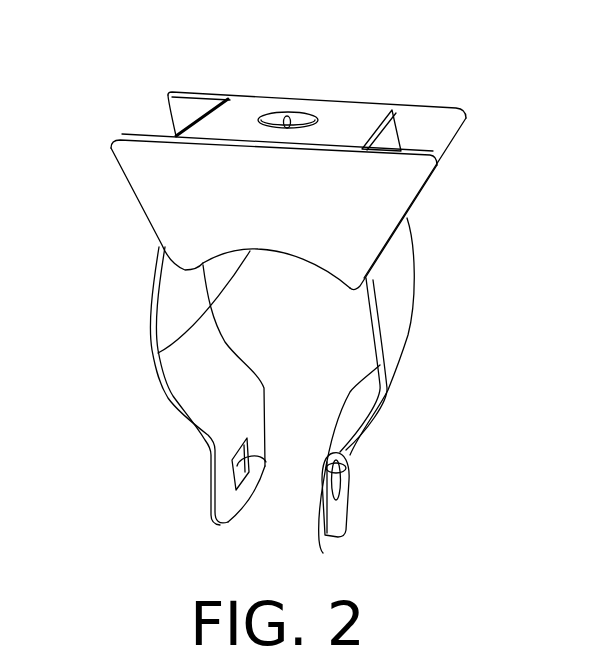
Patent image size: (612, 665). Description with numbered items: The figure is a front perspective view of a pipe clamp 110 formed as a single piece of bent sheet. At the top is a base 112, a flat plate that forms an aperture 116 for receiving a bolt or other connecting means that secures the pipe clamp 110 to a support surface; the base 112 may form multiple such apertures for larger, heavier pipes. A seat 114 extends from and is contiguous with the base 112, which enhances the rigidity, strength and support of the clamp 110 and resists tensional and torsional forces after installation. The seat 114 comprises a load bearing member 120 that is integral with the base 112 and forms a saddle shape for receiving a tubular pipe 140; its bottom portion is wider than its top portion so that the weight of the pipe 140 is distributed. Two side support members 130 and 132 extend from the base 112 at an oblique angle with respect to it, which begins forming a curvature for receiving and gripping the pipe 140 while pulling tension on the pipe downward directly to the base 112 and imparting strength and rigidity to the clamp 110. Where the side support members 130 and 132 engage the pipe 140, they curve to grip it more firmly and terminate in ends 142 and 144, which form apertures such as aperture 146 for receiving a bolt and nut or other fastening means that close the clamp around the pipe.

The pipe clamp 110 is at (105, 84).
The base 112 is at (348, 132).
The seat 114 is at (145, 215).
The aperture 116 is at (287, 126).
The load bearing member 120 is at (160, 353).
The side support member 130 is at (172, 395).
The side support member 132 is at (407, 315).
The pipe 140 is at (212, 493).
The end 142 is at (340, 500).
The end 144 is at (265, 467).
The aperture 146 is at (319, 545).